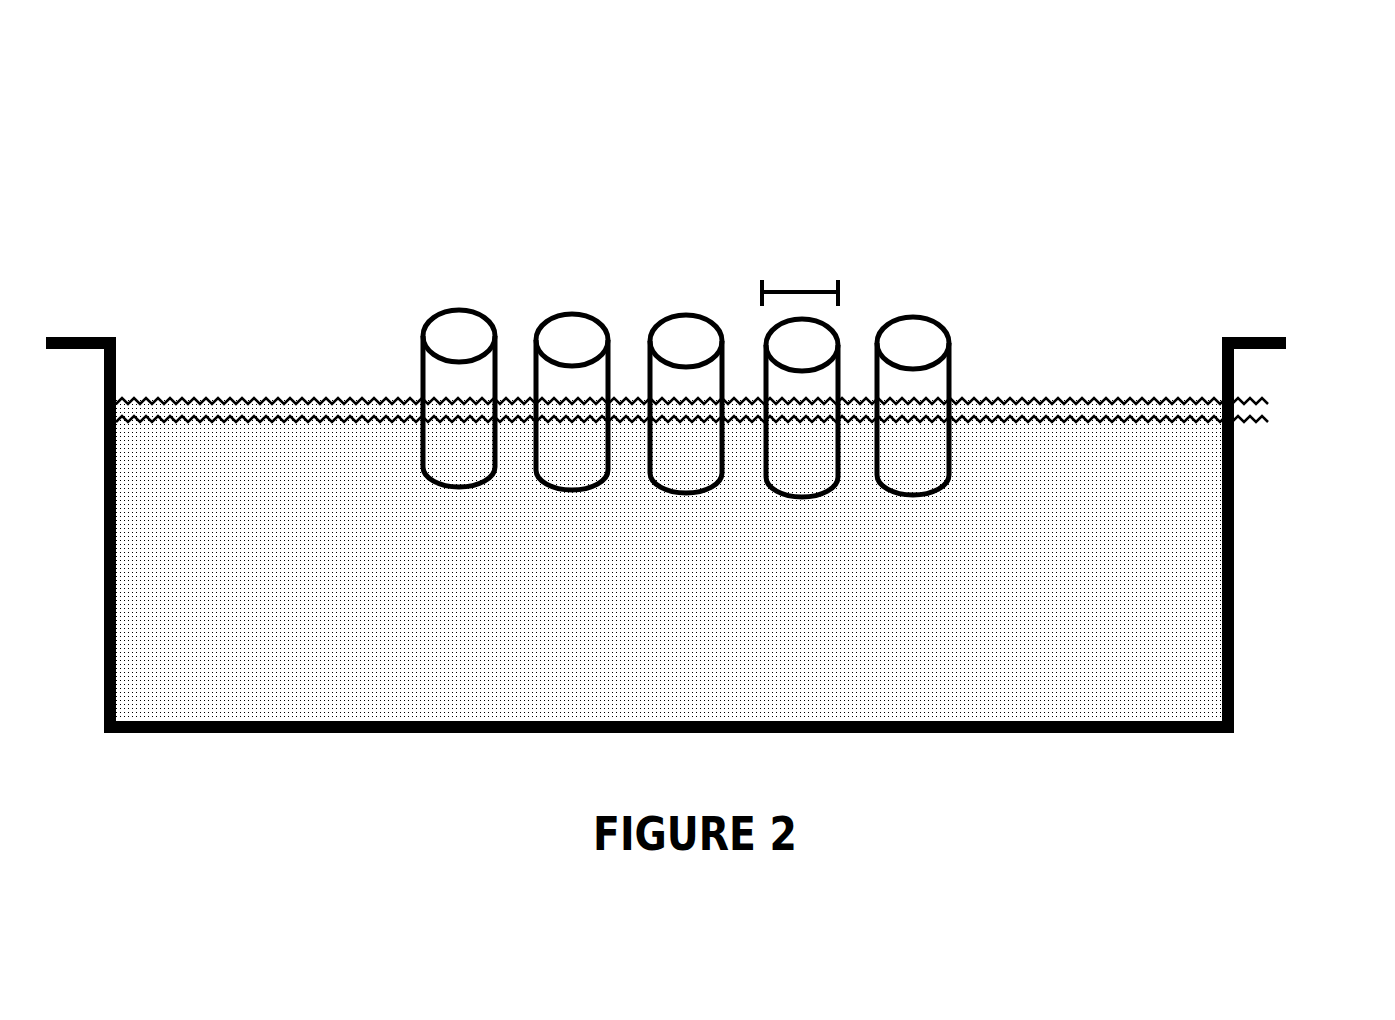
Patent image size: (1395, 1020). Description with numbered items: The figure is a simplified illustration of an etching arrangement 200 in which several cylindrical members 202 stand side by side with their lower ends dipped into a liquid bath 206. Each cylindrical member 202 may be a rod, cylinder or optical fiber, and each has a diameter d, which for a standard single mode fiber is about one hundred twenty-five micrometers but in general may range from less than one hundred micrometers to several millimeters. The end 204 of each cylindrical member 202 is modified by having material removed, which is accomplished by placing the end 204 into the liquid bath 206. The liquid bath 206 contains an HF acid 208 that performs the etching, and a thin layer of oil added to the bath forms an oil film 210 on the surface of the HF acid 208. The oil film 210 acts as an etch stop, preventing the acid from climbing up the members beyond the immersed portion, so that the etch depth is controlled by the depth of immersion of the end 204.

The nanowire growth system 200 is at (1120, 216).
The cylindrical member 202 is at (470, 310).
The end 204 is at (458, 488).
The liquid bath 206 is at (1235, 563).
The HF acid 208 is at (230, 692).
The oil film 210 is at (1083, 408).
The diameter d is at (800, 290).